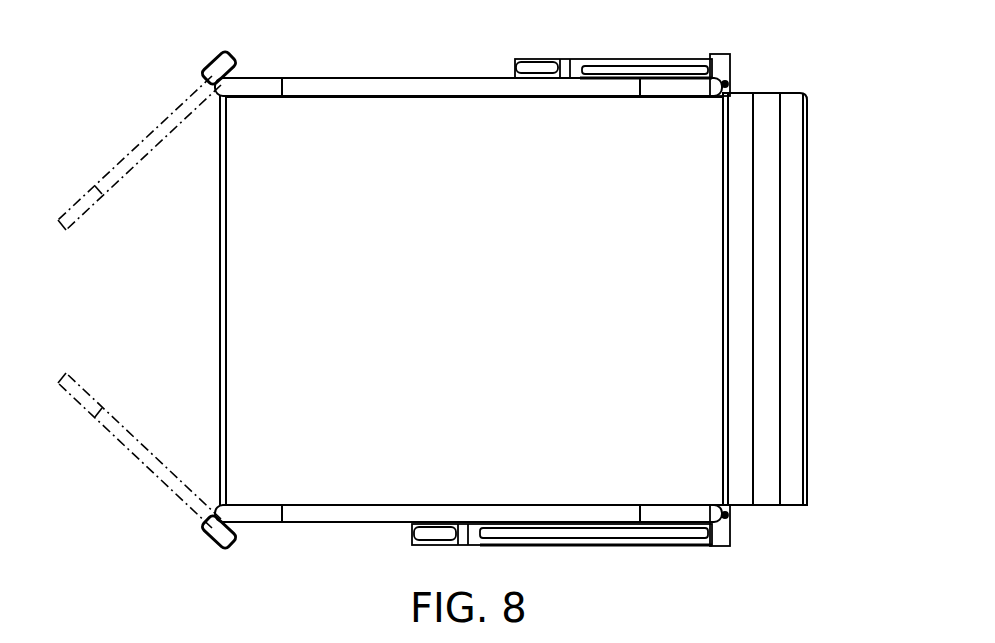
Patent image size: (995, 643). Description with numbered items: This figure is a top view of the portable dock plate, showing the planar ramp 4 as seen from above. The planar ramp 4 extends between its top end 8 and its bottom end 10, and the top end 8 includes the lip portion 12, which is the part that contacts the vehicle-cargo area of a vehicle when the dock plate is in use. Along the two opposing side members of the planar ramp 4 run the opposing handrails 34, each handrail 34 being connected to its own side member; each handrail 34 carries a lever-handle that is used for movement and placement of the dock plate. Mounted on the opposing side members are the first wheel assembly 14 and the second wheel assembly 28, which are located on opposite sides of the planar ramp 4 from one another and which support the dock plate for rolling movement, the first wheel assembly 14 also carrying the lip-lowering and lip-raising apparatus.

The planar ramp 4 is at (340, 296).
The top end 8 is at (672, 191).
The bottom end 10 is at (243, 216).
The lip portion 12 is at (780, 262).
The first wheel assembly 14 is at (567, 538).
The second wheel assembly 28 is at (621, 68).
The handrail 34 is at (441, 86).